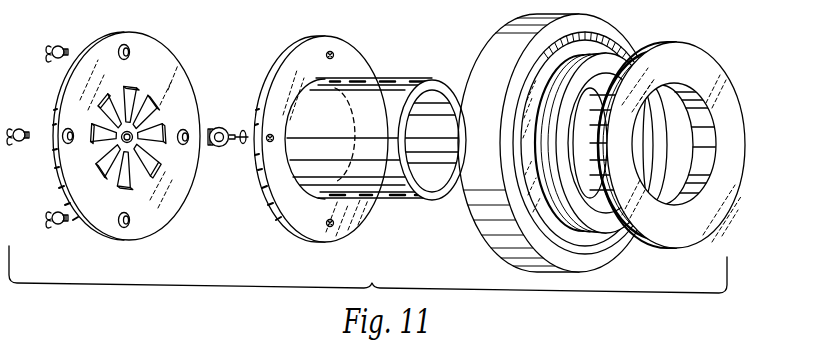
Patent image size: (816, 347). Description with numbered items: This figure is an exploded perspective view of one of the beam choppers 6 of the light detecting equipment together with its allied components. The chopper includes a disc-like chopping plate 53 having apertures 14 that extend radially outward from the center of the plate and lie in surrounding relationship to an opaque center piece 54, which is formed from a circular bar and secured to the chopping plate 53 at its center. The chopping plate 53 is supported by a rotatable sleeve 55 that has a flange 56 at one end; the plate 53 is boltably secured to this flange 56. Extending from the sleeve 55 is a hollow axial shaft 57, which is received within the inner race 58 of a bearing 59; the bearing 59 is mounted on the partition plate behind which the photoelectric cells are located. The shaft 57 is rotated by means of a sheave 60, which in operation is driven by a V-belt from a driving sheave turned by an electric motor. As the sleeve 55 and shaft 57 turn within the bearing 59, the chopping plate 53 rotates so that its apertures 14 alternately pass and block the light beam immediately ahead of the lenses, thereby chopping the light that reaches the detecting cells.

The beam chopper 6 is at (275, 43).
The apertures 14 is at (138, 130).
The chopping plate 53 is at (148, 58).
The opaque center piece 54 is at (220, 128).
The rotatable sleeve 55 is at (418, 78).
The flange 56 is at (352, 58).
The hollow axial shaft 57 is at (400, 183).
The inner race 58 is at (624, 60).
The bearing 59 is at (610, 27).
The sheave 60 is at (687, 62).